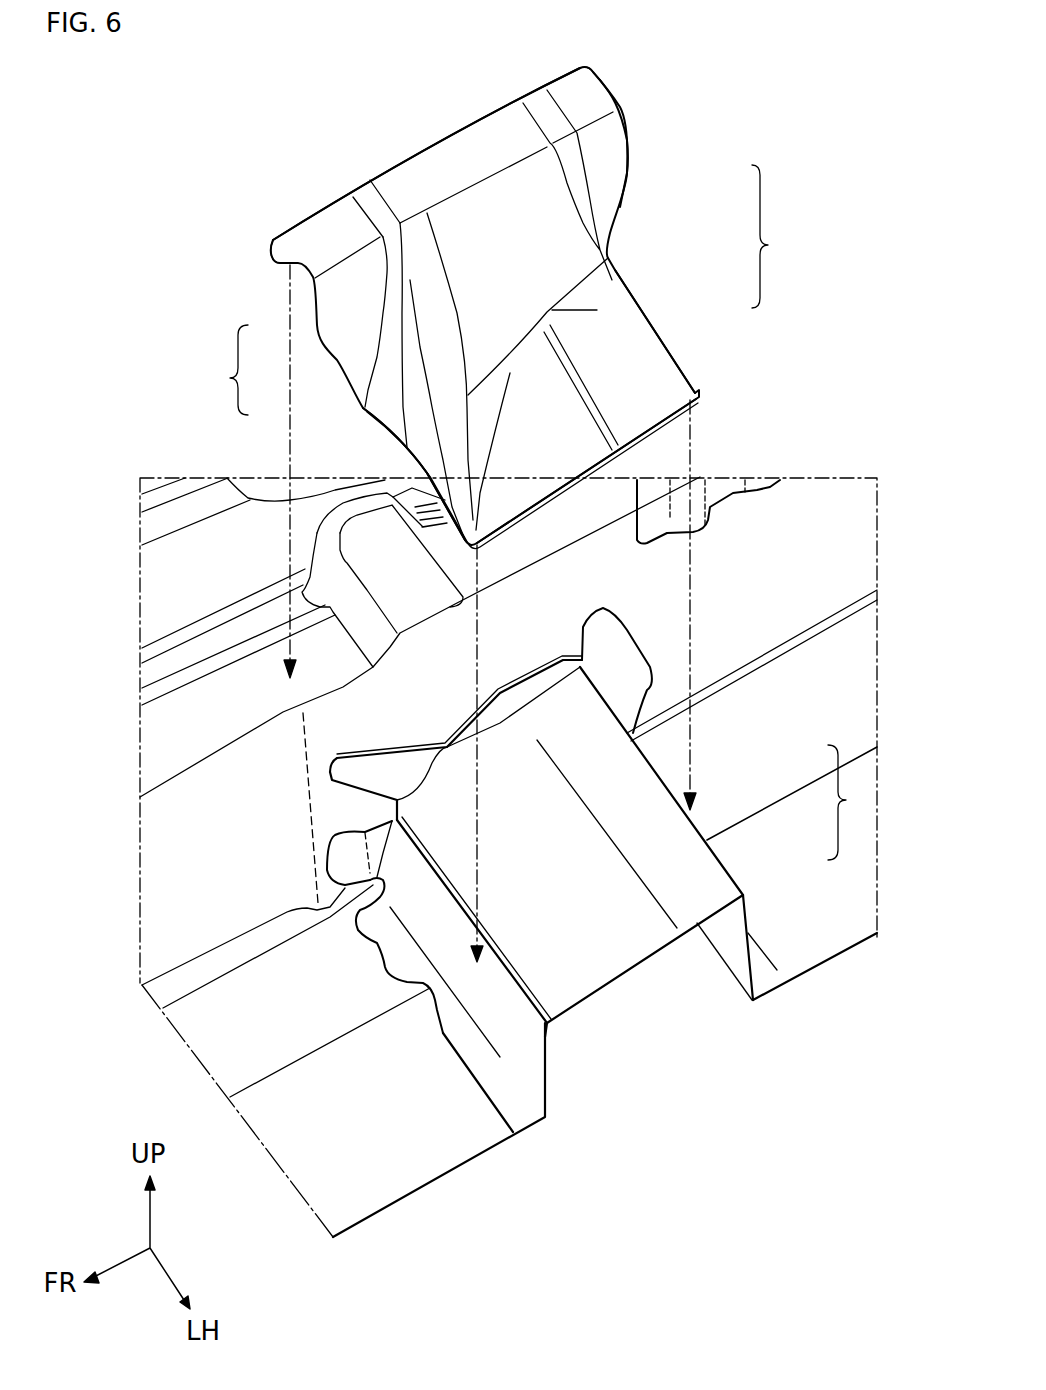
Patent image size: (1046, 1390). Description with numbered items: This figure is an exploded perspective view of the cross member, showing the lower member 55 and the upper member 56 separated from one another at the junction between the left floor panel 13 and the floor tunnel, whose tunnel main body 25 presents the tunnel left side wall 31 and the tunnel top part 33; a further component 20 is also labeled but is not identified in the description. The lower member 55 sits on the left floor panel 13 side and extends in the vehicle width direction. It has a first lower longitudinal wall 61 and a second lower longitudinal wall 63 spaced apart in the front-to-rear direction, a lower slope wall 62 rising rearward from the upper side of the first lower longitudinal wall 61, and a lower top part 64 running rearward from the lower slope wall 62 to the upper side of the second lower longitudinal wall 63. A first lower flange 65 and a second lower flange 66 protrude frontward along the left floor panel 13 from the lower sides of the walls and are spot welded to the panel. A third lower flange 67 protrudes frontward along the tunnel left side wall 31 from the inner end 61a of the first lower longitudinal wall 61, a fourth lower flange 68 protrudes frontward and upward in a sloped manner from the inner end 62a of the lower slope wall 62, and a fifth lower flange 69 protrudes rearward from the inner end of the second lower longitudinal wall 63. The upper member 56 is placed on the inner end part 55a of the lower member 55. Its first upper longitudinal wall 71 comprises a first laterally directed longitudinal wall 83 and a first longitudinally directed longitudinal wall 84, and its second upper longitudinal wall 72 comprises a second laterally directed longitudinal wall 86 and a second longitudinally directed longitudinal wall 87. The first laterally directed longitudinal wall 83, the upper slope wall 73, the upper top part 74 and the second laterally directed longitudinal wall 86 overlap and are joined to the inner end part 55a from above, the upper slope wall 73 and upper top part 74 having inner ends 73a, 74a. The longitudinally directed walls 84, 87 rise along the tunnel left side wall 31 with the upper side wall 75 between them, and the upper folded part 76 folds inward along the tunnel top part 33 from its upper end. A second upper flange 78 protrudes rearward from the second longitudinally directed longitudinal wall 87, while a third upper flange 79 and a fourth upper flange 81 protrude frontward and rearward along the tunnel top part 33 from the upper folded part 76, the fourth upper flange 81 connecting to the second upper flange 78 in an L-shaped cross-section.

The left floor panel 13 is at (383, 1123).
The side sill 20 is at (752, 725).
The tunnel main body 25 is at (227, 517).
The tunnel left side wall 31 is at (542, 603).
The tunnel top part 33 is at (193, 520).
The lower member 55 is at (735, 880).
The inner end part 55a is at (533, 810).
The upper member 56 is at (653, 413).
The first lower longitudinal wall 61 is at (483, 993).
The inner end 61a is at (387, 873).
The lower slope wall 62 is at (570, 863).
The inner end 62a is at (433, 785).
The second lower longitudinal wall 63 is at (733, 957).
The lower top part 64 is at (693, 855).
The first lower flange 65 is at (510, 1087).
The second lower flange 66 is at (767, 970).
The third lower flange 67 is at (347, 860).
The fourth lower flange 68 is at (347, 777).
The fifth lower flange 69 is at (623, 668).
The first upper longitudinal wall 71 is at (221, 370).
The second upper longitudinal wall 72 is at (777, 236).
The upper slope wall 73 is at (553, 370).
The inner end 73a is at (505, 415).
The upper top part 74 is at (663, 380).
The inner end 74a is at (598, 310).
The upper side wall 75 is at (492, 277).
The upper folded part 76 is at (472, 147).
The second upper flange 78 is at (617, 152).
The third upper flange 79 is at (310, 230).
The fourth upper flange 81 is at (580, 82).
The first laterally directed longitudinal wall 83 is at (425, 445).
The first longitudinally directed longitudinal wall 84 is at (392, 345).
The second laterally directed longitudinal wall 86 is at (663, 337).
The second longitudinally directed longitudinal wall 87 is at (582, 203).